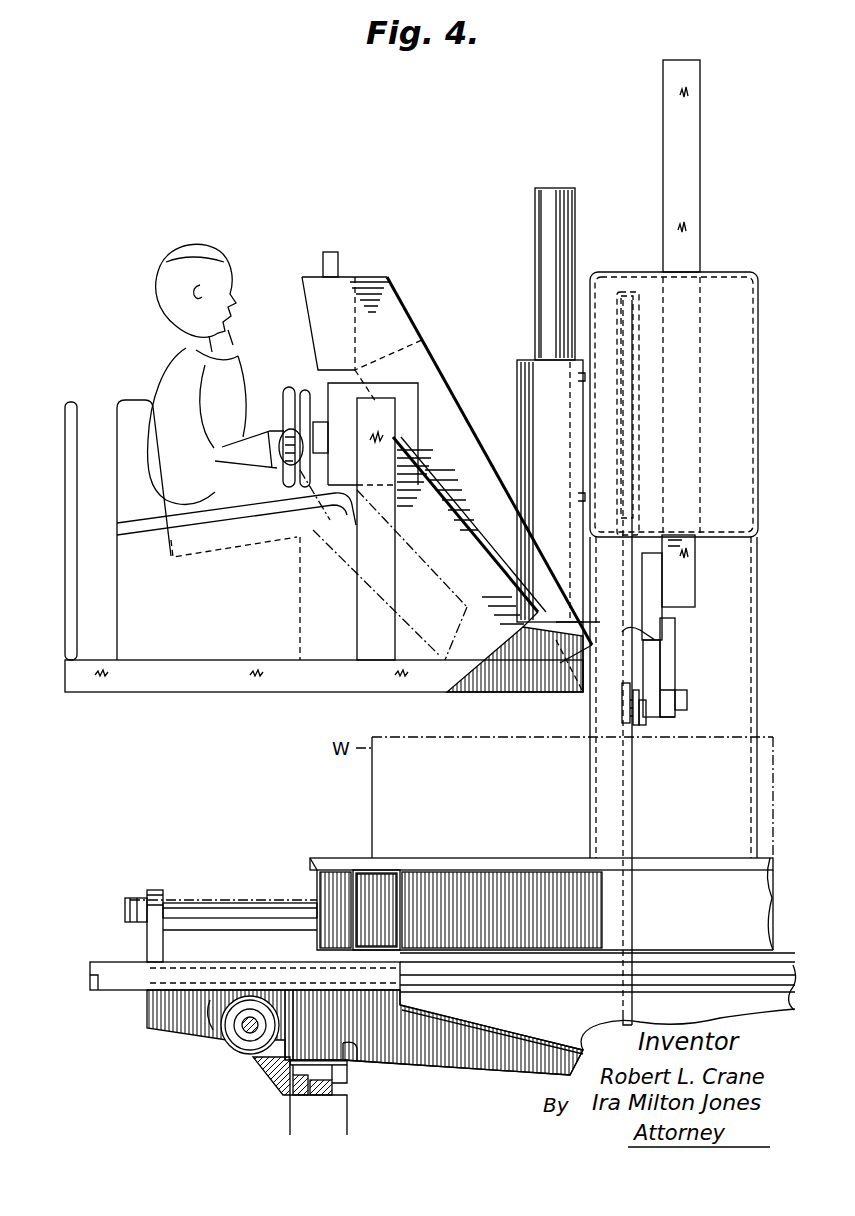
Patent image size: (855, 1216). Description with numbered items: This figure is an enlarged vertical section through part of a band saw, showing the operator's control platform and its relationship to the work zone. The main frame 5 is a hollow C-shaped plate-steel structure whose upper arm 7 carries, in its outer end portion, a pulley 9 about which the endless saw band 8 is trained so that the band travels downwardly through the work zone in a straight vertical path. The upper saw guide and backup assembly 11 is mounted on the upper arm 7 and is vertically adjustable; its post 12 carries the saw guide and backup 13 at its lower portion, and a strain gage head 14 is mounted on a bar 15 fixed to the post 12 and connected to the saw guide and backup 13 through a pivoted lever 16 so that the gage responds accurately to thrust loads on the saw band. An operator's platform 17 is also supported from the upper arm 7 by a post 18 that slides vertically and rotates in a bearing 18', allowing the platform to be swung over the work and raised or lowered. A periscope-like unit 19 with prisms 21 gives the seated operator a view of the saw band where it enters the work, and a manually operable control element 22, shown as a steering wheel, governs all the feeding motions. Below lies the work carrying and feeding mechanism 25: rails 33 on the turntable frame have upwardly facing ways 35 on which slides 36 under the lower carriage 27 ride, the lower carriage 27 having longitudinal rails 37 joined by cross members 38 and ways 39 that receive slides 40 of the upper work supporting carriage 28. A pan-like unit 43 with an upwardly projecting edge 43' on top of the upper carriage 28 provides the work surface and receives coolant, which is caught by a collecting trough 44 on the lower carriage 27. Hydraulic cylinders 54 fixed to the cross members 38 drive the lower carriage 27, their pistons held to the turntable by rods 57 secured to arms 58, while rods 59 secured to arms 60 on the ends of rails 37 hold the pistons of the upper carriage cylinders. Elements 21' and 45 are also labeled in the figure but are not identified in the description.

The main frame 5 is at (735, 282).
The upper arm 7 is at (745, 344).
The endless saw band 8 is at (633, 824).
The pulley 9 is at (604, 292).
The upper saw guide and backup assembly 11 is at (675, 632).
The post 12 is at (690, 573).
The saw guide and backup 13 is at (640, 722).
The head of the strain gage 14 is at (688, 700).
The bar 15 is at (672, 678).
The pivoted lever 16 is at (648, 658).
The operator's platform 17 is at (298, 678).
The post 18 is at (530, 274).
The bearing 18' is at (530, 489).
The periscope-like unit 19 is at (416, 358).
The prisms 21 is at (362, 321).
The brace 21' is at (496, 581).
The manually operable control element 22 is at (306, 392).
The work carrying and feeding mechanism 25 is at (214, 858).
The lower carriage 27 is at (134, 1040).
The upper work supporting carriage 28 is at (344, 845).
The rails 33 is at (298, 1122).
The ways 35 is at (300, 1090).
The slides 36 is at (278, 1080).
The longitudinal rails 37 is at (477, 1066).
The cross members 38 is at (350, 1054).
The ways 39 is at (545, 985).
The slides 40 is at (568, 964).
The pan-like unit 43 is at (392, 886).
The upwardly projecting edge 43' is at (287, 858).
The collecting trough 44 is at (497, 1033).
The plate 45 is at (98, 990).
The hydraulic cylinders 54 is at (232, 1032).
The rods 57 is at (244, 1032).
The arms 58 is at (262, 1055).
The rods 59 is at (262, 912).
The arms 60 is at (153, 890).